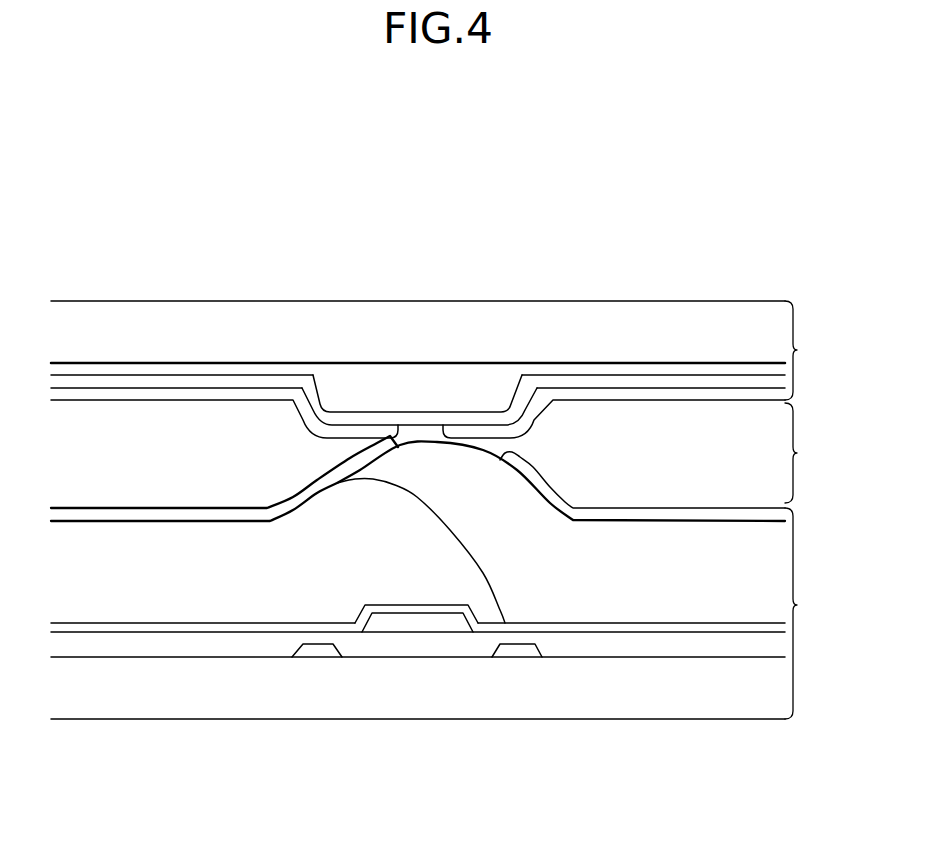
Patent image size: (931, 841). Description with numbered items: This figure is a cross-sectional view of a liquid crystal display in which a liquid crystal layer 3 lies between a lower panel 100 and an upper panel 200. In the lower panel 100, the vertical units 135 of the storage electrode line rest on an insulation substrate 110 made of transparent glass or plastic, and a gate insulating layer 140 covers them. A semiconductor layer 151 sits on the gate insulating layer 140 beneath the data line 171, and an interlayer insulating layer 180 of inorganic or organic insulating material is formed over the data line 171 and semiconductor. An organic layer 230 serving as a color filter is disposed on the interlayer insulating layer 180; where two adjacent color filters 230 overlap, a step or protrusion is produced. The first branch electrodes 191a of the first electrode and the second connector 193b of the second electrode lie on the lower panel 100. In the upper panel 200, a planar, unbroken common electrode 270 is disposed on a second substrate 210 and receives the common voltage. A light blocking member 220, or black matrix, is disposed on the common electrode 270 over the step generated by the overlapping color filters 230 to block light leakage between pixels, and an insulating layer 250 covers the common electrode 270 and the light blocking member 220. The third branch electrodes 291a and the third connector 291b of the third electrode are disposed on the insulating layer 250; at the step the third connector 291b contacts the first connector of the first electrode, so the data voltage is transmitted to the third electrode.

The lower panel 100 is at (811, 613).
The upper panel 200 is at (811, 350).
The liquid crystal layer 3 is at (800, 453).
The insulation substrate 110 is at (703, 697).
The vertical units 135 is at (320, 650).
The gate insulating layer 140 is at (573, 645).
The semiconductor layer 151 is at (393, 628).
The data line 171 is at (433, 618).
The interlayer insulating layer 180 is at (142, 627).
The first branch electrodes 191a is at (78, 521).
The second connector 193b is at (622, 513).
The second substrate 210 is at (487, 315).
The light blocking member 220 is at (420, 390).
The organic layer 230 is at (188, 598).
The insulating layer 250 is at (733, 382).
The common electrode 270 is at (657, 368).
The third branch electrodes 291a is at (137, 395).
The third connector 291b is at (343, 430).